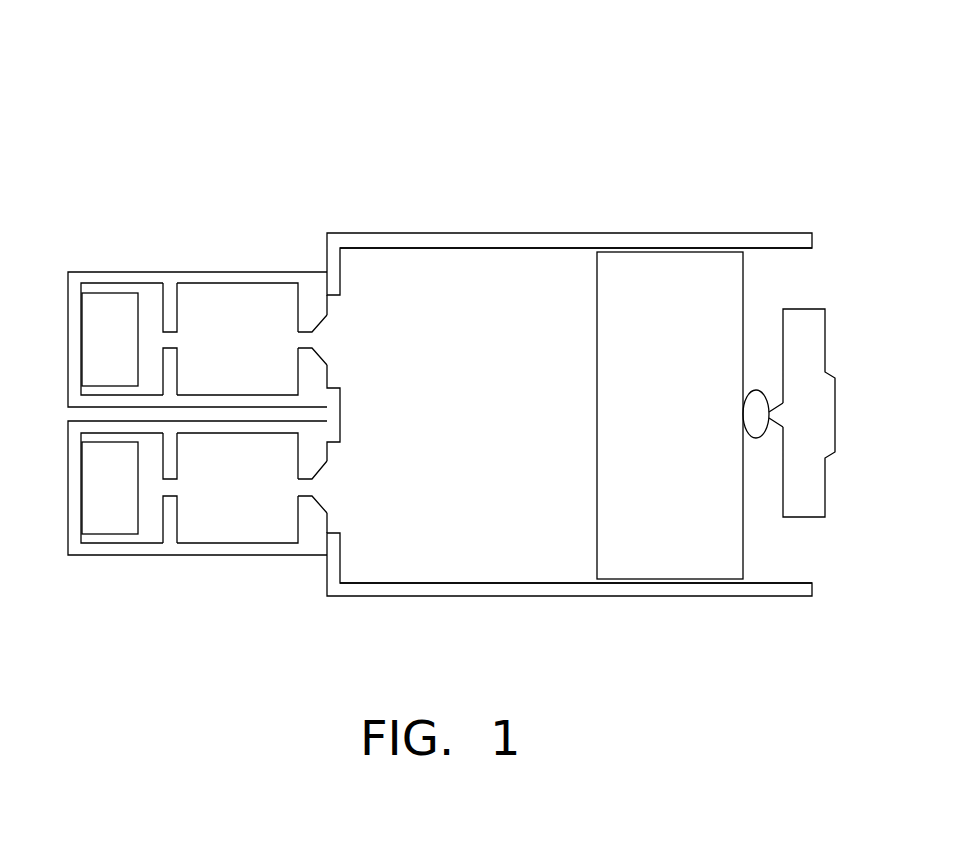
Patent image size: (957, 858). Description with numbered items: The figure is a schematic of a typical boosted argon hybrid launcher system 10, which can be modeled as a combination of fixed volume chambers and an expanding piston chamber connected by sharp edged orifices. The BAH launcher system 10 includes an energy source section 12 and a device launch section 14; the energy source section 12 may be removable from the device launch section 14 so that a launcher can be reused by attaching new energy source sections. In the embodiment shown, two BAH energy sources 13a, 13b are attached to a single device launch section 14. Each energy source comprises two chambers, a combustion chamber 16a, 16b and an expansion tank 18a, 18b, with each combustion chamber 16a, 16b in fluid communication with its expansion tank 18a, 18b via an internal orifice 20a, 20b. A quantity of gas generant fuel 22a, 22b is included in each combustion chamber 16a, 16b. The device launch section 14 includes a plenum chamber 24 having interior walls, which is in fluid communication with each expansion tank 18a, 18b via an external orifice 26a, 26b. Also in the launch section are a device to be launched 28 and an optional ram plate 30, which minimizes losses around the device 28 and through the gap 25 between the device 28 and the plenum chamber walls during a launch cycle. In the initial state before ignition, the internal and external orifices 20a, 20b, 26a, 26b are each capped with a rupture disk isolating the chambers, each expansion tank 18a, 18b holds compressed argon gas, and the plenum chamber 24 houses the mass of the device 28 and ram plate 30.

The BAH launcher system 10 is at (478, 103).
The energy source section 12 is at (291, 181).
The BAH energy source 13a is at (217, 248).
The BAH energy source 13b is at (217, 579).
The device launch section 14 is at (628, 165).
The combustion chamber 16a is at (148, 300).
The combustion chamber 16b is at (148, 530).
The expansion tank 18a is at (258, 356).
The expansion tank 18b is at (258, 499).
The internal orifice 20a is at (172, 342).
The internal orifice 20b is at (172, 493).
The gas generant fuel 22a is at (88, 333).
The gas generant fuel 22b is at (88, 488).
The plenum chamber 24 is at (478, 425).
The gap 25 is at (648, 583).
The external orifice 26a is at (310, 340).
The external orifice 26b is at (310, 490).
The device to be launched 28 is at (813, 283).
The ram plate 30 is at (705, 530).